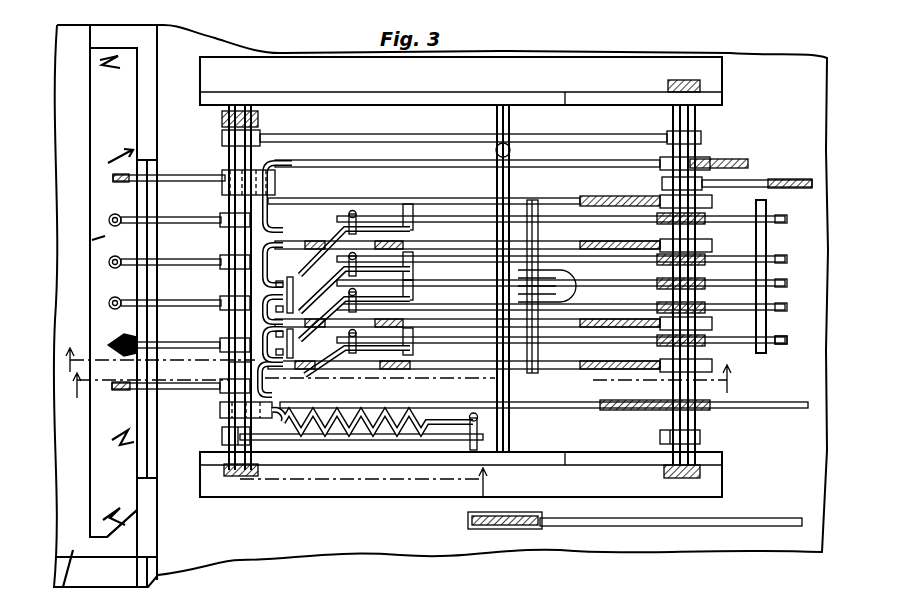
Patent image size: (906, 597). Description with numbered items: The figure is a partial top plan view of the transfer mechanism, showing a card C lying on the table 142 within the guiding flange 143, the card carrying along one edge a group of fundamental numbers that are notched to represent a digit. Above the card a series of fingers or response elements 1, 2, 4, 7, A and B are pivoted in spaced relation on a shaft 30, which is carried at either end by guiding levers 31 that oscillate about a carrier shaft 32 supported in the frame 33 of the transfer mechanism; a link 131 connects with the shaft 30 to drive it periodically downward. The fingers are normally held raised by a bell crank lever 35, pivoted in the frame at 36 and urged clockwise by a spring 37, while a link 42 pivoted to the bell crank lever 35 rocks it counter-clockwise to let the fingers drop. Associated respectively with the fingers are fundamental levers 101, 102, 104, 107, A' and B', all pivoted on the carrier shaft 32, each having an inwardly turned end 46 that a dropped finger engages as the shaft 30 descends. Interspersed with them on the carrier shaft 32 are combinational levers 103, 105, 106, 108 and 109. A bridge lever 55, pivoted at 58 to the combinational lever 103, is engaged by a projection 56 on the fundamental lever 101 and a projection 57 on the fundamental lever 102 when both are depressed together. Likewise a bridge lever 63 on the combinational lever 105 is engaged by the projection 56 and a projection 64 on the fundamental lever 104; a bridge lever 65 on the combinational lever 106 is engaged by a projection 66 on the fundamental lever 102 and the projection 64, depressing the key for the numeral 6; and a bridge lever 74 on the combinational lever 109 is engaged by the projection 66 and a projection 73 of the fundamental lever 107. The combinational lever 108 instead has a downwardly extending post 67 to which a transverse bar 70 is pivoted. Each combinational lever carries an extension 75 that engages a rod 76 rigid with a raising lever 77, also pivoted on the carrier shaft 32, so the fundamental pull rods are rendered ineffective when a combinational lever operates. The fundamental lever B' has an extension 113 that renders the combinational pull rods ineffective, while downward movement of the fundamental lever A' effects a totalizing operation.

The link 131 is at (253, 87).
The card C is at (123, 75).
The flange 143 is at (150, 527).
The table 142 is at (110, 517).
The finger B is at (185, 172).
The finger 7 is at (200, 218).
The finger 4 is at (201, 260).
The finger 2 is at (200, 301).
The finger 1 is at (200, 343).
The finger A is at (173, 400).
The section line 6- 6 is at (405, 356).
The fundamental lever A' is at (581, 392).
The shaft 30 is at (230, 372).
The bell crank lever 35 is at (220, 422).
The pivot 36 is at (220, 435).
The frame 33 is at (613, 458).
The guiding lever 31 is at (557, 455).
The fundamental lever B' is at (487, 171).
The extension 113 is at (730, 160).
The raising lever 77 is at (810, 167).
The combinational lever 106 is at (496, 198).
The fundamental lever 104 is at (478, 205).
The projection 64 is at (400, 277).
The combinational lever 108 is at (476, 286).
The combinational lever 105 is at (476, 311).
The pivot 58 is at (340, 356).
The fundamental lever 102 is at (407, 343).
The projection 56 is at (300, 357).
The projection 57 is at (433, 323).
The combinational lever 103 is at (463, 340).
The fundamental lever 101 is at (508, 378).
The carrier shaft 32 is at (700, 437).
The projection 66 is at (283, 251).
The bridge lever 63 is at (286, 287).
The bridge lever 55 is at (294, 343).
The bridge lever 74 is at (333, 205).
The projection 73 is at (418, 205).
The inwardly turned end 46 is at (283, 200).
The bridge lever 65 is at (309, 183).
The fundamental lever 107 is at (388, 188).
The combinational lever 109 is at (472, 188).
The transverse bar 70 is at (540, 355).
The post 67 is at (577, 272).
The rod 76 is at (760, 242).
The extension 75 is at (775, 344).
The link 42 is at (313, 412).
The spring 37 is at (370, 432).